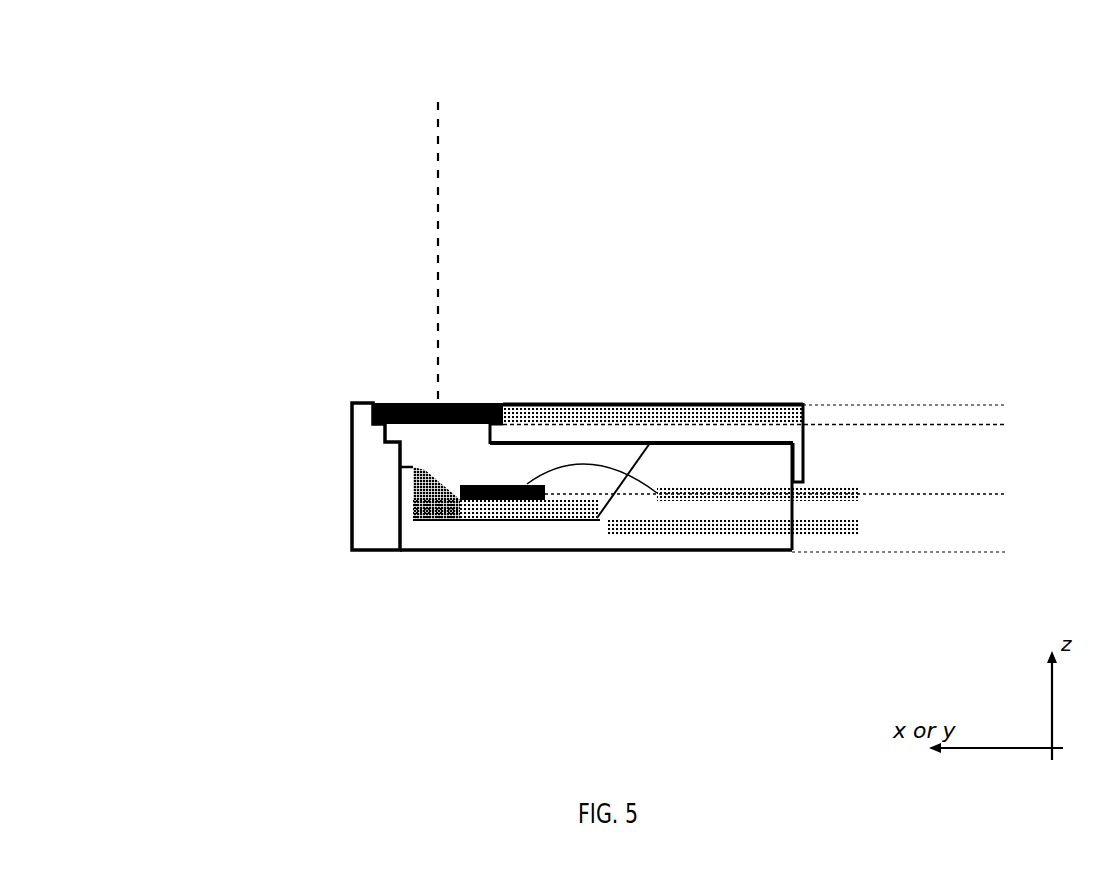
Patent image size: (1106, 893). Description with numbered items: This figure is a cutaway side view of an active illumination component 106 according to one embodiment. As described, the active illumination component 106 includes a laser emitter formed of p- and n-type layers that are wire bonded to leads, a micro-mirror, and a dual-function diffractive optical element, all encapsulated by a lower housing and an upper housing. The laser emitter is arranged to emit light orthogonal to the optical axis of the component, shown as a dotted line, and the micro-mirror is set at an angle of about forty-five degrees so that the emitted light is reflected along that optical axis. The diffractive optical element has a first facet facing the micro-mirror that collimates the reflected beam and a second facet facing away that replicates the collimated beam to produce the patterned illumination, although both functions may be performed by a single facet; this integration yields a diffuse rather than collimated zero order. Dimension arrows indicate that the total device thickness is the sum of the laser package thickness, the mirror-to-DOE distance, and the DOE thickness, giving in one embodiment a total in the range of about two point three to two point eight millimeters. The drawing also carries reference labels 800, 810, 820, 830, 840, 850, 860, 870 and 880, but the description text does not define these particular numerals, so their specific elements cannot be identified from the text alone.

The active illumination component 106 is at (154, 156).
The substrate 800 is at (470, 522).
The sensor die 810 is at (598, 518).
The lid layer 820 is at (503, 424).
The bond pad layer 830 is at (740, 503).
The contact layer 840 is at (745, 535).
The housing 850 is at (392, 400).
The optical axis 860 is at (435, 137).
The window plate 870 is at (395, 405).
The lid 880 is at (503, 424).